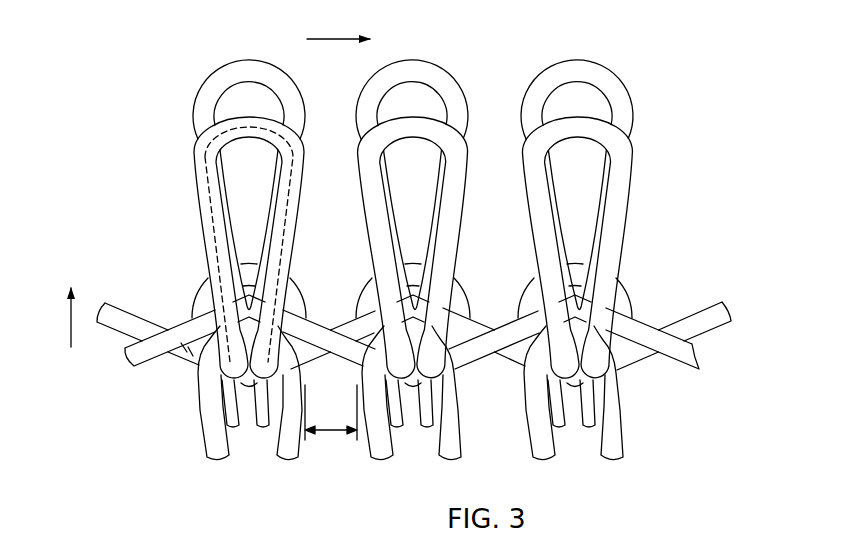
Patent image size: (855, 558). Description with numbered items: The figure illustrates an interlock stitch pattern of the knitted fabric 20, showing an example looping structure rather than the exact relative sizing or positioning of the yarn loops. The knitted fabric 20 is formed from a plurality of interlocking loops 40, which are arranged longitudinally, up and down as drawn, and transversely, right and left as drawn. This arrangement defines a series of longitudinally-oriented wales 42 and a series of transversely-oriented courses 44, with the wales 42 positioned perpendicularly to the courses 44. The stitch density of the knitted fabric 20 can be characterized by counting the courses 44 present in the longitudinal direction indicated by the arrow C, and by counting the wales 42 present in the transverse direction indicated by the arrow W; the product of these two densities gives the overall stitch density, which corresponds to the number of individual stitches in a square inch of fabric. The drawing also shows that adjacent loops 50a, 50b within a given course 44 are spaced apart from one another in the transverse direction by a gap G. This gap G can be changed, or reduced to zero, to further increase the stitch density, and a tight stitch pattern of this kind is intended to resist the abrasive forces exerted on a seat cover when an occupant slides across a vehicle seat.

The knitted fabric 20 is at (419, 305).
The interlocking loops 40 is at (303, 168).
The wales 42 is at (246, 466).
The courses 44 is at (684, 177).
The adjacent loop 50a is at (202, 440).
The adjacent loop 50b is at (370, 453).
The gap G is at (331, 433).
The arrow W is at (352, 39).
The arrow C is at (69, 329).